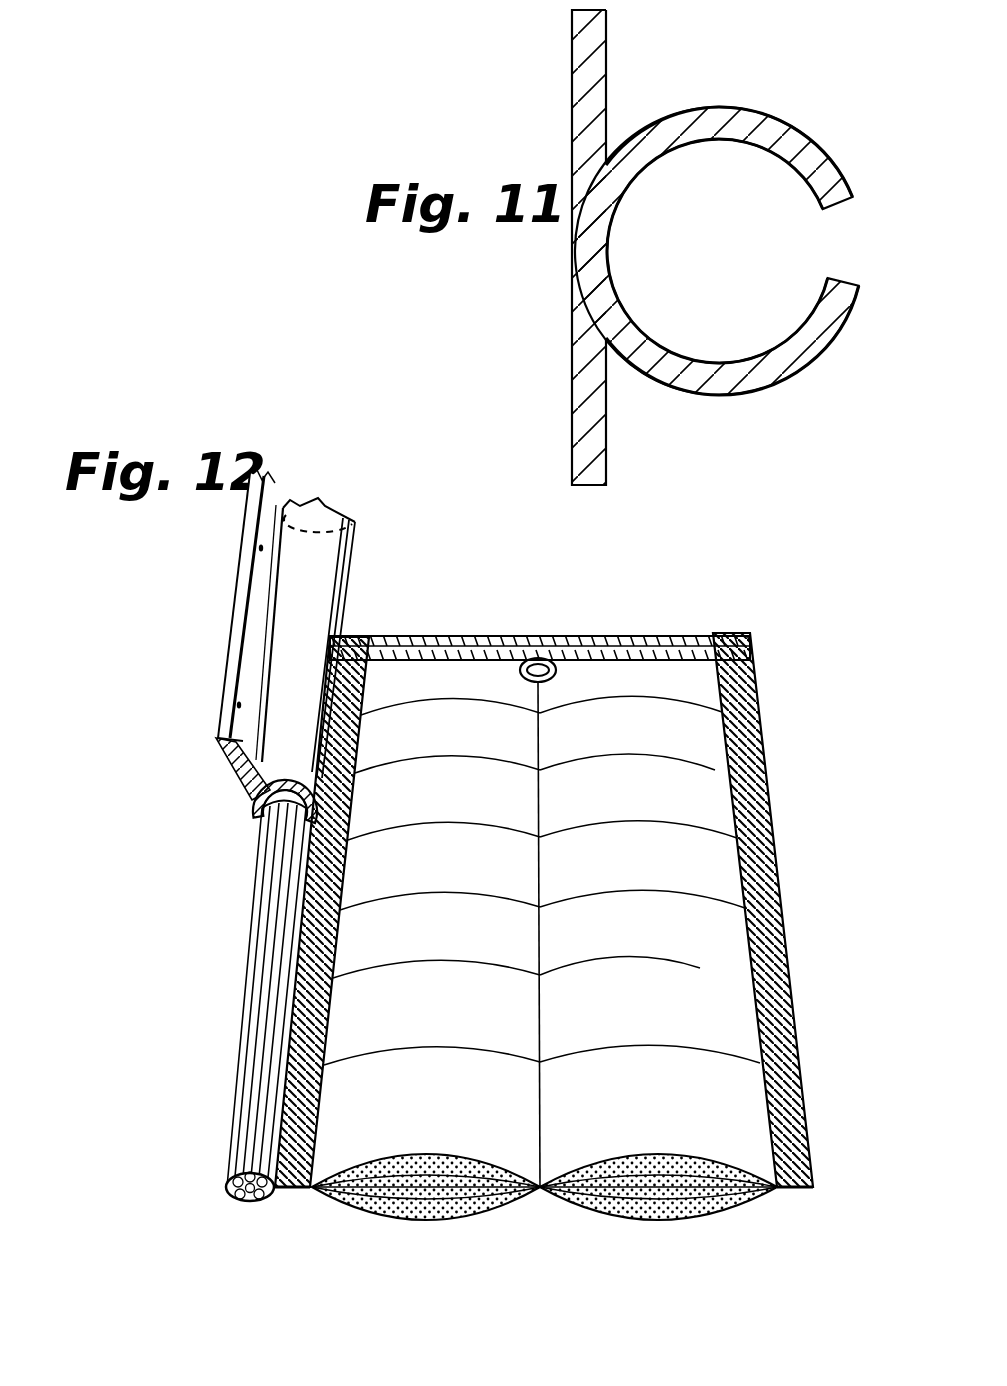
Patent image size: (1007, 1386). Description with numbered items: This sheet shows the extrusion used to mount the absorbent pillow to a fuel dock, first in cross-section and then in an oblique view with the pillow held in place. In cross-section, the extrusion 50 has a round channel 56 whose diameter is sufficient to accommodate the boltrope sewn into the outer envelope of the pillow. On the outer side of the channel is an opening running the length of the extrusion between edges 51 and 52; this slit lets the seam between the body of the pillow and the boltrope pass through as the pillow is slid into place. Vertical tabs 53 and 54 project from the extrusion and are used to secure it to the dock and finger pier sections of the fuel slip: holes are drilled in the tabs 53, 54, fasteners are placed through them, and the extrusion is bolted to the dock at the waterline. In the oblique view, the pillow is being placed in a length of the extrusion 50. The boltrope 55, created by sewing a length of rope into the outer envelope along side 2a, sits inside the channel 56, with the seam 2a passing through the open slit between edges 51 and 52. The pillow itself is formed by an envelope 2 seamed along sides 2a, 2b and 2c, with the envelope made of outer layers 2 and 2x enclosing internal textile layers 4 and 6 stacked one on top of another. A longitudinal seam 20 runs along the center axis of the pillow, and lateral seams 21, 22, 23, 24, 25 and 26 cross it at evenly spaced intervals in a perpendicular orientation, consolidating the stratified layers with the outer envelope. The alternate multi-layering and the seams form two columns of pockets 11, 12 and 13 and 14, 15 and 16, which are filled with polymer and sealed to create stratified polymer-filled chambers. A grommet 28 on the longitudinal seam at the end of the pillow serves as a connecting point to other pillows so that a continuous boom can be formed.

In FIG. 12, the envelope 2 is at (469, 880).
In FIG. 12, the side seam 2a is at (300, 940).
In FIG. 12, the side seam 2b is at (489, 635).
In FIG. 12, the side seam 2c is at (762, 750).
In FIG. 12, the textile material layer 2x is at (562, 1196).
In FIG. 12, the textile material layer 4 is at (760, 1189).
In FIG. 12, the textile material layer 6 is at (728, 1198).
In FIG. 12, the pocket 11 is at (345, 1210).
In FIG. 12, the pocket 12 is at (385, 1212).
In FIG. 12, the pocket 13 is at (438, 1220).
In FIG. 12, the pocket 14 is at (703, 1205).
In FIG. 12, the pocket 15 is at (645, 1205).
In FIG. 12, the pocket 16 is at (588, 1200).
In FIG. 12, the longitudinal seam 20 is at (540, 1190).
In FIG. 12, the lateral seam 21 is at (410, 704).
In FIG. 12, the lateral seam 22 is at (410, 762).
In FIG. 12, the lateral seam 23 is at (408, 830).
In FIG. 12, the lateral seam 24 is at (402, 897).
In FIG. 12, the lateral seam 25 is at (396, 968).
In FIG. 12, the lateral seam 26 is at (385, 1058).
In FIG. 12, the grommet 28 is at (558, 672).
In FIG. 12, the extrusion 50 is at (216, 658).
In FIG. 11, the edge of extrusion opening 51 is at (850, 214).
In FIG. 12, the edge of extrusion opening 51 is at (300, 832).
In FIG. 11, the edge of extrusion opening 52 is at (860, 292).
In FIG. 11, the vertical tab 53 is at (585, 35).
In FIG. 12, the vertical tab 53 is at (256, 620).
In FIG. 11, the vertical tab 54 is at (585, 455).
In FIG. 12, the boltrope 55 is at (262, 868).
In FIG. 11, the channel 56 is at (692, 210).
In FIG. 12, the channel 56 is at (262, 805).